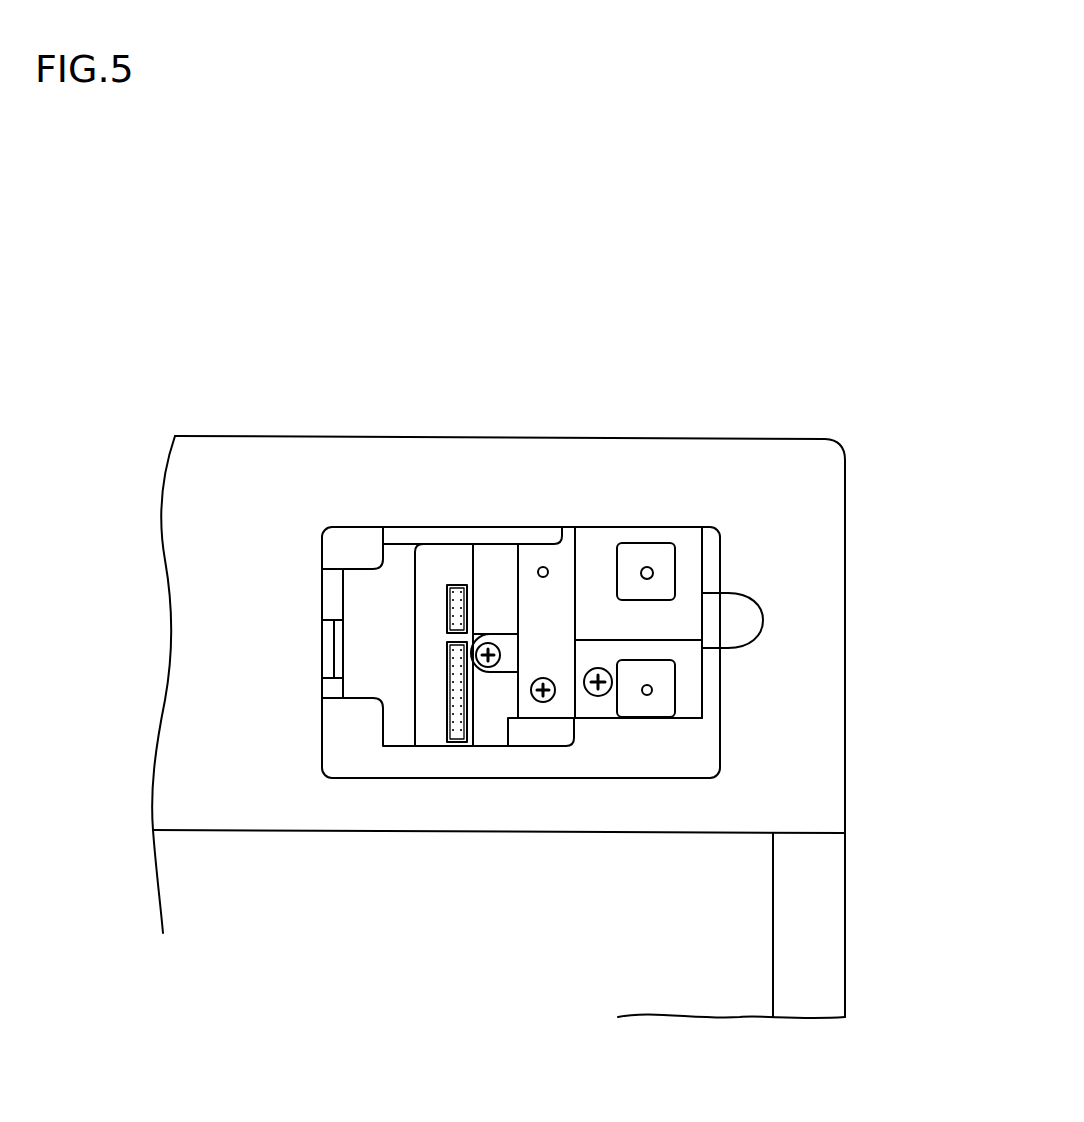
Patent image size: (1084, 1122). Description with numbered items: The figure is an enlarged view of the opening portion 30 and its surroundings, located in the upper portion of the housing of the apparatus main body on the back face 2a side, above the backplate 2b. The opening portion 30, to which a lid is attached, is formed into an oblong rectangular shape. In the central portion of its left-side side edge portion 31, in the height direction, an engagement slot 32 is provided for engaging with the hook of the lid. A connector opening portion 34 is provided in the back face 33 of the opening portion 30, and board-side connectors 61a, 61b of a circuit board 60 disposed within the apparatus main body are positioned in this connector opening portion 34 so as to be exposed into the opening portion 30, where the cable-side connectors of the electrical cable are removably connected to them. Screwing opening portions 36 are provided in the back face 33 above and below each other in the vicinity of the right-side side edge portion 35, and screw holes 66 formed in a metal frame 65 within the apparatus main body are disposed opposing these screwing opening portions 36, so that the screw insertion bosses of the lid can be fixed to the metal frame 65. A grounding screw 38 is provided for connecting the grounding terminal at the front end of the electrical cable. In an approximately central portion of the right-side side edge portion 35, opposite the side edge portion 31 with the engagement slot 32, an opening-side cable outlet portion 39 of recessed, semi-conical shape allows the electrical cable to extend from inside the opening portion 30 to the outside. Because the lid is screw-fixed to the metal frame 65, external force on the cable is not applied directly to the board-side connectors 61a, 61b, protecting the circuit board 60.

The back face 2a is at (807, 485).
The backplate 2b is at (745, 935).
The opening portion 30 is at (532, 762).
The left-side side edge portion 31 is at (322, 587).
The engagement slot 32 is at (327, 655).
The back face of the opening portion 33 is at (394, 590).
The connector opening portion 34 is at (417, 572).
The right-side side edge portion 35 is at (693, 683).
The screwing opening portion 36 is at (623, 560).
The grounding screw 38 is at (598, 697).
The opening-side cable outlet portion 39 is at (753, 618).
The circuit board 60 is at (428, 697).
The board-side connector 61a is at (453, 742).
The board-side connector 61b is at (458, 585).
The metal frame 65 is at (558, 600).
The screw hole 66 is at (647, 572).